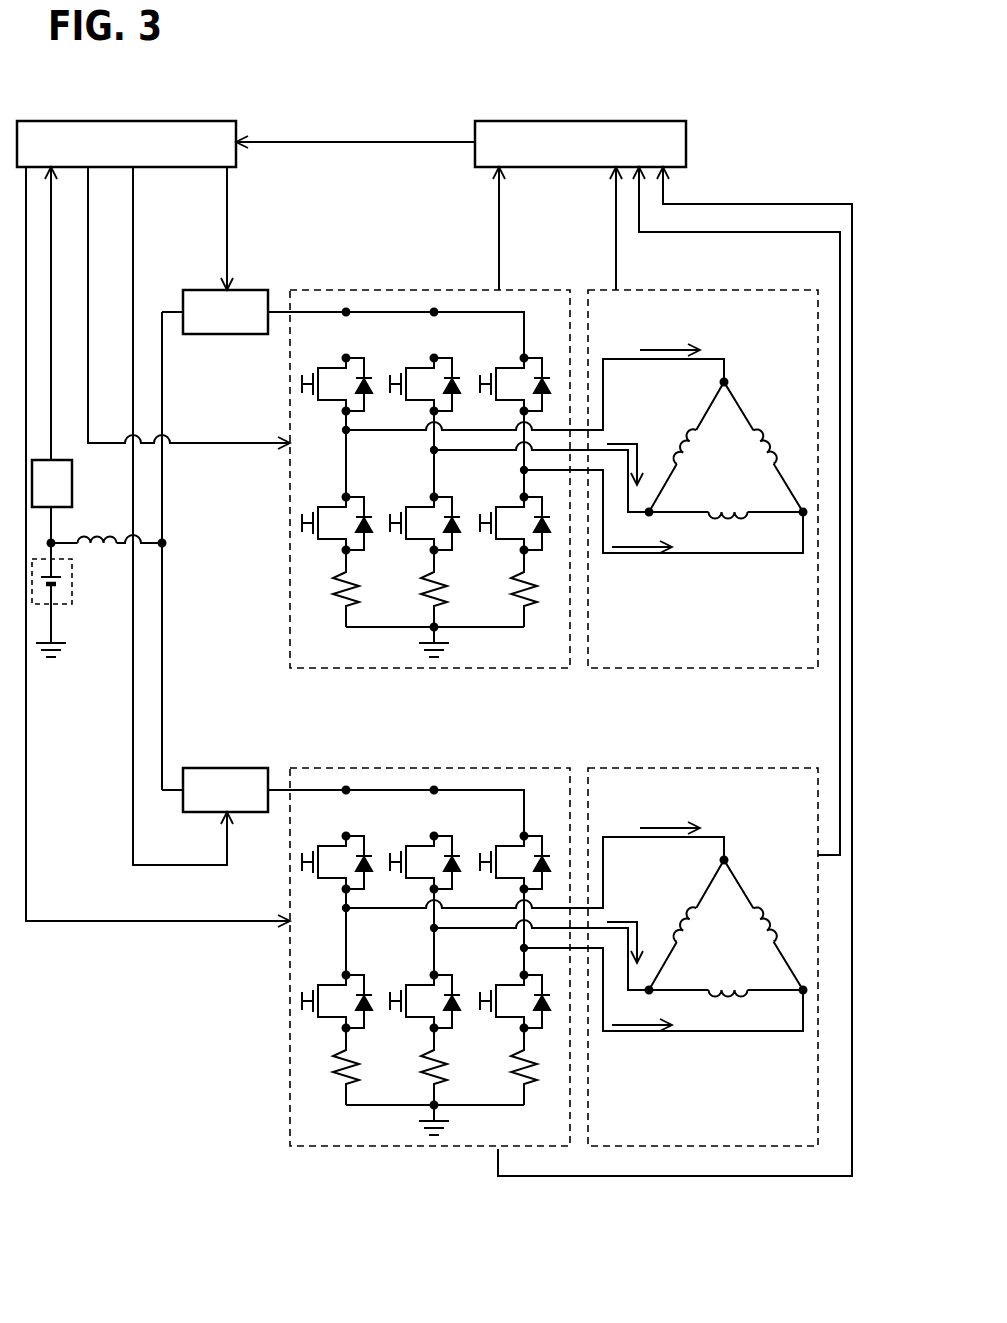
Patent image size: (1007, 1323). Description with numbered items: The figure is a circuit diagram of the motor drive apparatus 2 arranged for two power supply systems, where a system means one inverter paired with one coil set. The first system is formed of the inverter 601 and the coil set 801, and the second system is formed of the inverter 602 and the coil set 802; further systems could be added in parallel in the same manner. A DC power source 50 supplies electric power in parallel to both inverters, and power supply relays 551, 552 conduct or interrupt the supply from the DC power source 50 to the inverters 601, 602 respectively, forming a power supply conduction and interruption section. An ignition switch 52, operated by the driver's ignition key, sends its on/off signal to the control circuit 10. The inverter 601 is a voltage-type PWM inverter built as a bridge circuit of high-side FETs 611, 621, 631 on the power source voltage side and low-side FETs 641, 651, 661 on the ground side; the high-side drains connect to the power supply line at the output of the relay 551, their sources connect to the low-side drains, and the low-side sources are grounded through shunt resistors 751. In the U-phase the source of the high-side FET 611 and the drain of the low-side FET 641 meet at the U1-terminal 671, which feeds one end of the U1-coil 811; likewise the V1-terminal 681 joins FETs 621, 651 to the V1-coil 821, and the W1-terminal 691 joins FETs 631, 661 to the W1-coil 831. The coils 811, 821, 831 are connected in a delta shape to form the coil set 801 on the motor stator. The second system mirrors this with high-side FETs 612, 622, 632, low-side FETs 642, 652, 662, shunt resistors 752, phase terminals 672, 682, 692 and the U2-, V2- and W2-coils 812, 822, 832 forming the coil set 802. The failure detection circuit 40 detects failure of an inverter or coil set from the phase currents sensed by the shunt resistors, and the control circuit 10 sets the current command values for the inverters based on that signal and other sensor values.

The motor drive apparatus 2 is at (707, 120).
The control circuit 10 is at (131, 121).
The failure detection circuit 40 is at (586, 121).
The DC power source 50 is at (62, 604).
The ignition switch 52 is at (73, 478).
The power supply relay 551 is at (248, 290).
The power supply relay 552 is at (225, 762).
The inverter 601 is at (517, 289).
The inverter 602 is at (434, 939).
The high-side FET 611 is at (328, 367).
The high-side FET 621 is at (416, 367).
The high-side FET 631 is at (506, 367).
The low-side FET 641 is at (328, 506).
The low-side FET 651 is at (416, 506).
The low-side FET 661 is at (506, 506).
The high-side FET 612 is at (337, 846).
The high-side FET 622 is at (425, 846).
The high-side FET 632 is at (515, 846).
The low-side FET 642 is at (337, 986).
The low-side FET 652 is at (425, 986).
The low-side FET 662 is at (515, 991).
The U1-terminal 671 is at (343, 430).
The V1-terminal 681 is at (431, 450).
The W1-terminal 691 is at (521, 470).
The U2-terminal 672 is at (324, 907).
The V2-terminal 682 is at (411, 926).
The W2-terminal 692 is at (497, 940).
The shunt resistor 751 is at (357, 582).
The shunt resistor 752 is at (452, 1066).
The coil set 801 is at (728, 289).
The coil set 802 is at (703, 939).
The U1-coil 811 is at (679, 437).
The V1-coil 821 is at (733, 522).
The W1-coil 831 is at (774, 452).
The U2-coil 812 is at (683, 905).
The V2-coil 822 is at (747, 995).
The W2-coil 832 is at (771, 912).